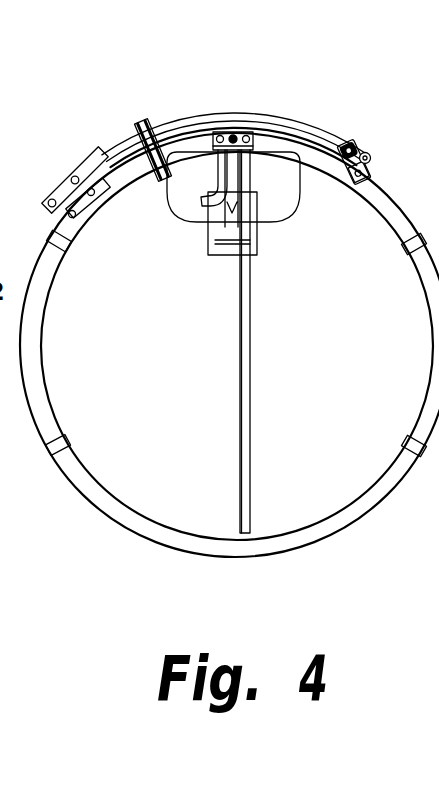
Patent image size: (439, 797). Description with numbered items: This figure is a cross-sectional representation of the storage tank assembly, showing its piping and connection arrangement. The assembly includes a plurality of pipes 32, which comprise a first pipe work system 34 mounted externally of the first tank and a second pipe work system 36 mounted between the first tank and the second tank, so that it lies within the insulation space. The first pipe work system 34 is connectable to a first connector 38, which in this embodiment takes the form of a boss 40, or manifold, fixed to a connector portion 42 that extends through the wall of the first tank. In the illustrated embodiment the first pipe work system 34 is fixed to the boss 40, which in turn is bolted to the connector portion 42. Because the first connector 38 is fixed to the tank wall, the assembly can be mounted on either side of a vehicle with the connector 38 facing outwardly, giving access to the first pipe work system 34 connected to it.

The pipes 32 is at (174, 114).
The first pipe work system 34 is at (307, 125).
The second pipe work system 36 is at (328, 172).
The first connector 38 is at (77, 195).
The boss 40 is at (60, 190).
The connector portion 42 is at (89, 206).